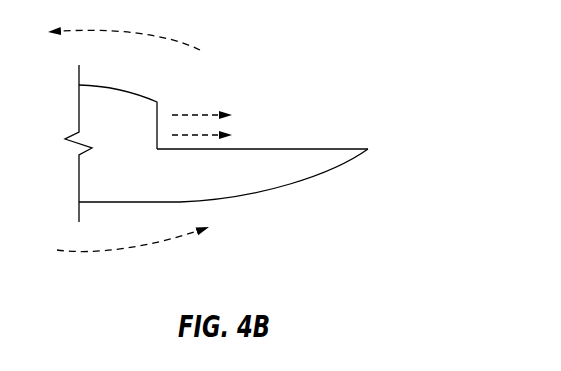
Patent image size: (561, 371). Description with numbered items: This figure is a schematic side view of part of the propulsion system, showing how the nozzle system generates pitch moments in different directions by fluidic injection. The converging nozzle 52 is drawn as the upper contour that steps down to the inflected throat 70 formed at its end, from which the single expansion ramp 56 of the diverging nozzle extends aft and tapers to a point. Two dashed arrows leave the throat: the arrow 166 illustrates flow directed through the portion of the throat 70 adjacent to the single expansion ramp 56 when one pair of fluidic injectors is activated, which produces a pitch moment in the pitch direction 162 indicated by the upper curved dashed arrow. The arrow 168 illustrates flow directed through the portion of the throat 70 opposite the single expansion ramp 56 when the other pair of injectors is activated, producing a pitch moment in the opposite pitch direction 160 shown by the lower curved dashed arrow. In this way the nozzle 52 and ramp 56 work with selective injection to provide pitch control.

The nozzle 52 is at (134, 91).
The single expansion ramp 56 is at (298, 94).
The inflected throat 70 is at (288, 138).
The pitch direction 160 is at (100, 253).
The pitch direction 162 is at (107, 32).
The arrow 166 is at (193, 135).
The arrow 168 is at (202, 115).